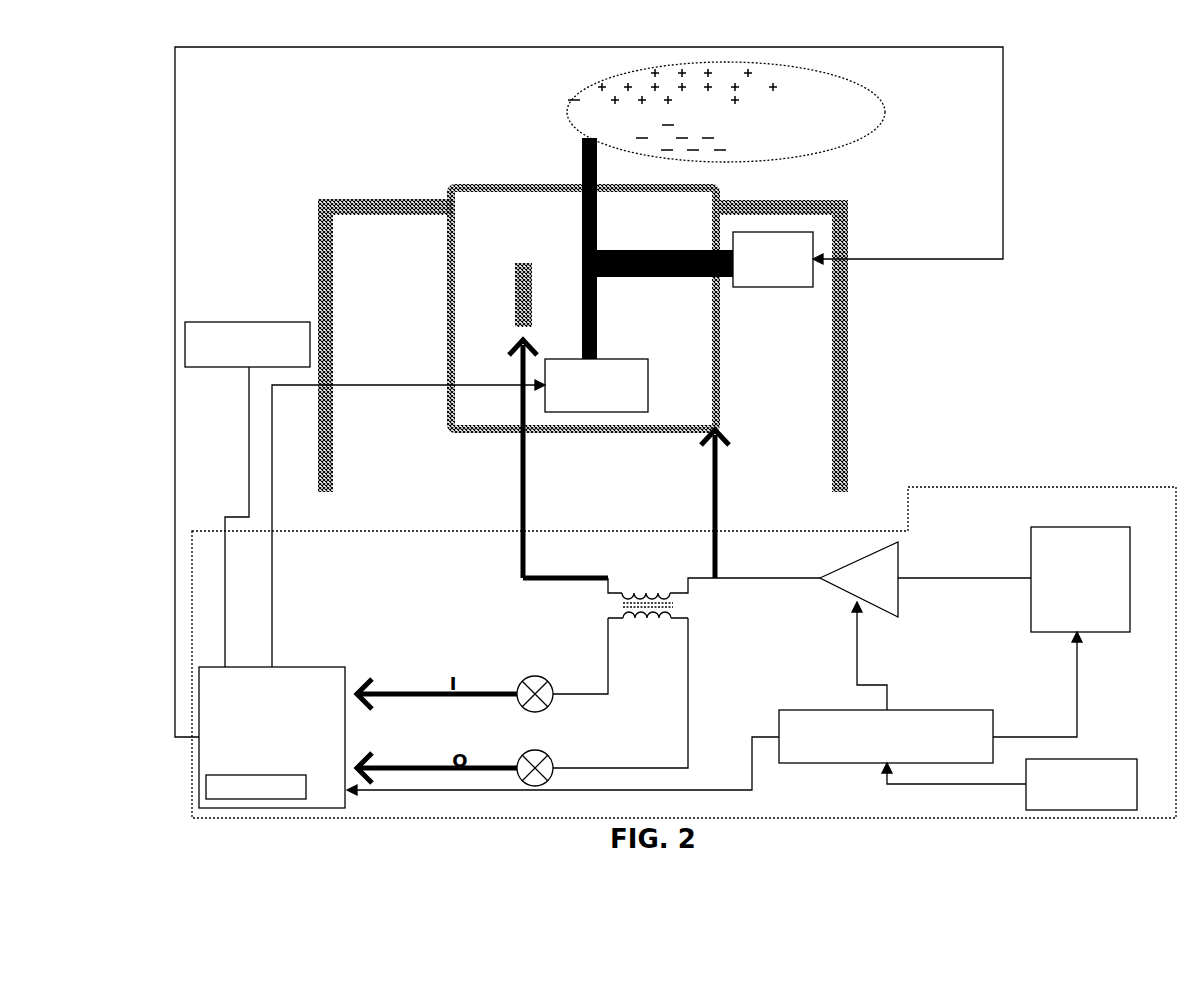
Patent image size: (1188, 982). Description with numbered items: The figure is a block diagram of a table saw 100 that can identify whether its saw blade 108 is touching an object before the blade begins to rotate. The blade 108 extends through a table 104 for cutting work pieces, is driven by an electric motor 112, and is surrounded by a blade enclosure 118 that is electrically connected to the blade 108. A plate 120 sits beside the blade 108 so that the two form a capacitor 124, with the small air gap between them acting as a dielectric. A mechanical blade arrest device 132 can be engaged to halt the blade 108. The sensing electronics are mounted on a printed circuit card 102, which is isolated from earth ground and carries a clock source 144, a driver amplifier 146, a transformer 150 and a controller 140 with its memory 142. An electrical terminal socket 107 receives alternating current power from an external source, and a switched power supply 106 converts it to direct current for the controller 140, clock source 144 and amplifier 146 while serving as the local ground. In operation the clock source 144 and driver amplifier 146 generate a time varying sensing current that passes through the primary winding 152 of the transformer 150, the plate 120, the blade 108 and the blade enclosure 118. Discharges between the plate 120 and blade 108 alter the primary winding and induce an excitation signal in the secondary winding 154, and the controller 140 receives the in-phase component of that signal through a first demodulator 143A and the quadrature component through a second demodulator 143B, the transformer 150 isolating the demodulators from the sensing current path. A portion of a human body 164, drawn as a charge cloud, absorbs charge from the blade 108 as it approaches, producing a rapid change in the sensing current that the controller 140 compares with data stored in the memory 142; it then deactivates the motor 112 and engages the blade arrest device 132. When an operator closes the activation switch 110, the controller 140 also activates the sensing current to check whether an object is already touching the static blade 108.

The table saw 100 is at (990, 358).
The printed circuit card 102 is at (993, 487).
The table 104 is at (428, 199).
The switched power supply 106 is at (930, 708).
The electrical terminal socket 107 is at (1100, 759).
The saw blade 108 is at (597, 233).
The activation switch 110 is at (210, 320).
The electric motor 112 is at (750, 288).
The blade enclosure 118 is at (528, 183).
The plate 120 is at (517, 260).
The capacitor 124 is at (545, 263).
The blade arrest device 132 is at (622, 359).
The controller 140 is at (315, 667).
The memory 142 is at (260, 773).
The first demodulator 143A is at (528, 678).
The second demodulator 143B is at (528, 752).
The clock source 144 is at (1043, 527).
The driver amplifier 146 is at (877, 617).
The transformer 150 is at (681, 604).
The primary winding 152 is at (660, 590).
The secondary winding 154 is at (632, 618).
The human body 164 is at (855, 142).